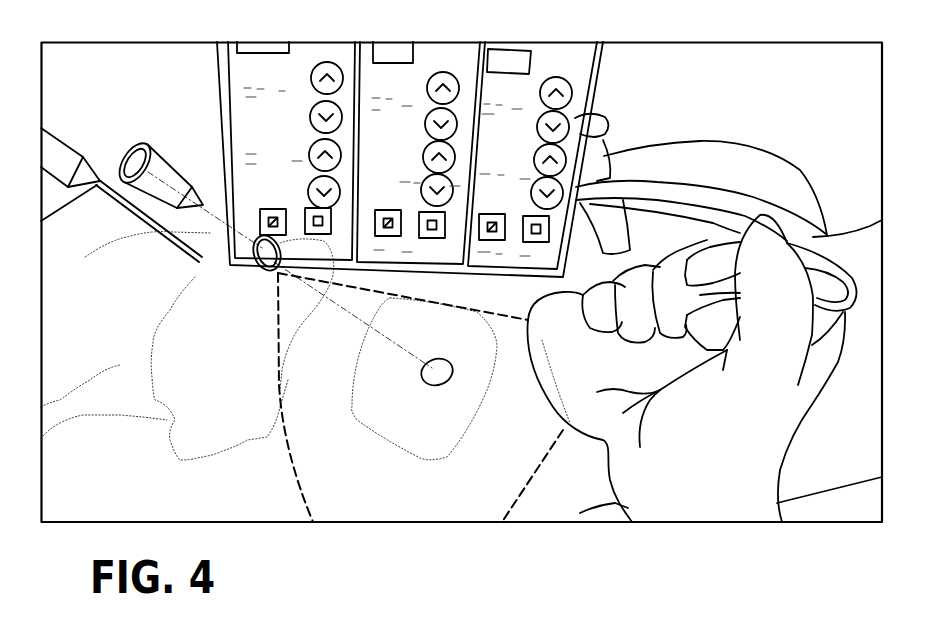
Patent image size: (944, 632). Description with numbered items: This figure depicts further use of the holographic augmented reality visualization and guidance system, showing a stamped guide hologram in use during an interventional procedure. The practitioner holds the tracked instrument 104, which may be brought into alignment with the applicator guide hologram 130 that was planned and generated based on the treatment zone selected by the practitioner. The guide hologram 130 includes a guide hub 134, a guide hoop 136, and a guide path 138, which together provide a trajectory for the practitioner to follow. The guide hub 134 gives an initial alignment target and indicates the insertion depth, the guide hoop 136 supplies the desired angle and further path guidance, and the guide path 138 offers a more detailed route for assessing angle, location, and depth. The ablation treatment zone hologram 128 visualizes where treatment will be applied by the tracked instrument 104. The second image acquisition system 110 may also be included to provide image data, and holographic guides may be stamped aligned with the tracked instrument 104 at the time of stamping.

The tracked instrument 104 is at (136, 214).
The second image acquisition system 110 is at (567, 408).
The ablation treatment zone hologram 128 is at (437, 388).
The applicator guide hologram 130 is at (323, 293).
The guide hub 134 is at (145, 141).
The guide hoop 136 is at (256, 269).
The guide path 138 is at (378, 333).